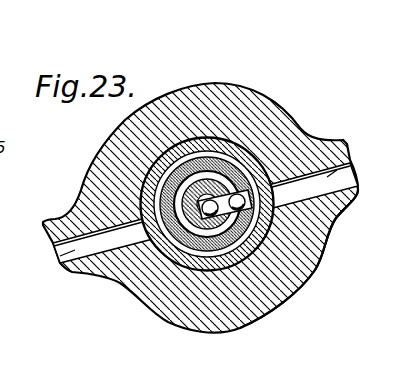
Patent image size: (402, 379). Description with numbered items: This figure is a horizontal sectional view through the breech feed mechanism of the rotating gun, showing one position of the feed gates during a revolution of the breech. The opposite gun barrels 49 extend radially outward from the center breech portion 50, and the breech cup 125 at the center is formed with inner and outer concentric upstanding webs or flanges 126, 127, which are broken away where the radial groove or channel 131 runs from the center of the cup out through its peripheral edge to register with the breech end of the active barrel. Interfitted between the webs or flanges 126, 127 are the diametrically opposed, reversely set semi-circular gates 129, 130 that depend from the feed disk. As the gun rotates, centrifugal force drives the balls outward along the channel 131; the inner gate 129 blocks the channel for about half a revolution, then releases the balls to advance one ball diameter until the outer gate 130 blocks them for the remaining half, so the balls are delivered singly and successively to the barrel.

The gun barrel 49 is at (347, 156).
The center breech portion 50 is at (240, 315).
The breech cup 125 is at (225, 143).
The inner web or flange 126 is at (243, 272).
The outer web or flange 127 is at (273, 243).
The inner gate 129 is at (162, 253).
The outer gate 130 is at (197, 146).
The radial groove or channel 131 is at (250, 193).